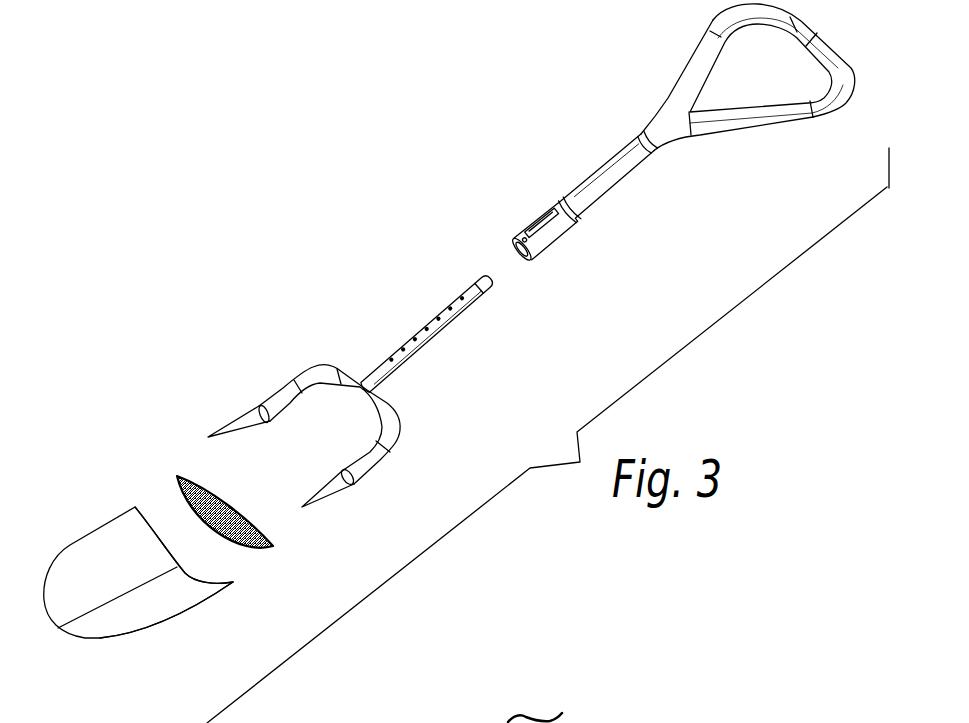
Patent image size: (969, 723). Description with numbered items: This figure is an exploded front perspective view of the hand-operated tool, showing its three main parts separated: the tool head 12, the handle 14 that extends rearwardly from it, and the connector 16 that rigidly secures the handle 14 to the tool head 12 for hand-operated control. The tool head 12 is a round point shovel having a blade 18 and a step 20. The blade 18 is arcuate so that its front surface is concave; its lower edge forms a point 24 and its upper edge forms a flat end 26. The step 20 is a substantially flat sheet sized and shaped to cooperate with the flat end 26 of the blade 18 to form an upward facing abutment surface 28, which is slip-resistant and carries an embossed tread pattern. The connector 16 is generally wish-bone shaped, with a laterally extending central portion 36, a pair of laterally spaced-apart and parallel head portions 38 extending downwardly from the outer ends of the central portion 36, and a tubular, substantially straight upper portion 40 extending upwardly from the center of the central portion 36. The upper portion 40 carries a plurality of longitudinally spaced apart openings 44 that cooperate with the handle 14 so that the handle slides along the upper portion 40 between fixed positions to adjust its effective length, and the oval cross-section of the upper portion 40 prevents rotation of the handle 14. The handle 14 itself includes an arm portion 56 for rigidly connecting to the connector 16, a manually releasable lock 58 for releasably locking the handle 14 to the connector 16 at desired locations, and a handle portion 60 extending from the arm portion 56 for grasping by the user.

The tool head 12 is at (160, 607).
The handle 14 is at (682, 154).
The connector 16 is at (387, 385).
The blade 18 is at (197, 606).
The step 20 is at (247, 489).
The point 24 is at (56, 629).
The flat end 26 is at (212, 578).
The abutment surface 28 is at (213, 483).
The central portion 36 is at (393, 404).
The head portions 38 is at (292, 388).
The upper portion 40 is at (462, 354).
The openings 44 is at (470, 300).
The arm portion 56 is at (627, 176).
The lock 58 is at (563, 231).
The handle portion 60 is at (777, 124).